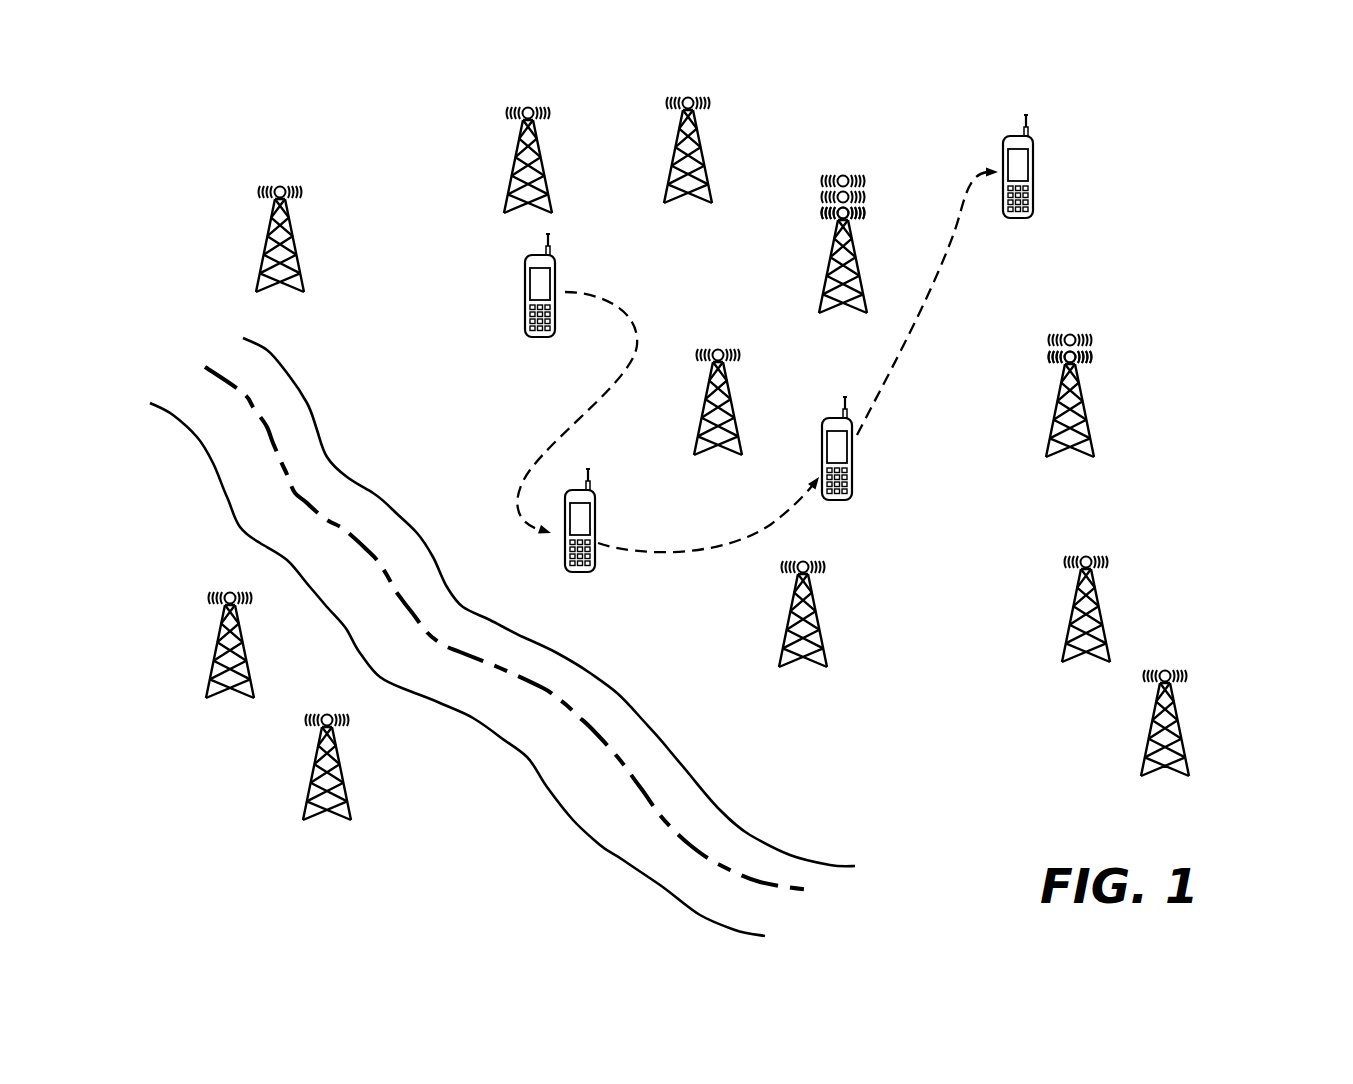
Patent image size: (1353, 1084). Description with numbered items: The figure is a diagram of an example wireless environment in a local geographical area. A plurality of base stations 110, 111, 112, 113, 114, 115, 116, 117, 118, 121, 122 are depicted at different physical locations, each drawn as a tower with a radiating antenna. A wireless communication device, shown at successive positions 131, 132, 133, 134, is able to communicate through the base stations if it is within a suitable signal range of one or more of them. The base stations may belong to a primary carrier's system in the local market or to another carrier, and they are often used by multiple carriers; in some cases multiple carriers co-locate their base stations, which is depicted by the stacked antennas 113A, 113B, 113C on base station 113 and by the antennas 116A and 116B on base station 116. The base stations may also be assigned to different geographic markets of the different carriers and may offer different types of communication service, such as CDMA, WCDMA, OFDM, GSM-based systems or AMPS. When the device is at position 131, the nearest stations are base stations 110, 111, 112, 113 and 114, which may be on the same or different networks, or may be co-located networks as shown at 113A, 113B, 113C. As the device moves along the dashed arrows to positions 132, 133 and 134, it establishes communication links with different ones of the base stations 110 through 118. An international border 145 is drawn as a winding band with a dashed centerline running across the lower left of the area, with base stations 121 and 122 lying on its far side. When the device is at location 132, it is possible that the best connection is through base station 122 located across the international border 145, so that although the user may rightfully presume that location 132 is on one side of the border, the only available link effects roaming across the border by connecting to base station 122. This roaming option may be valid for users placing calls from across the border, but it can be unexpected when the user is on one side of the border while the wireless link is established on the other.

The base station 110 is at (297, 260).
The base station 111 is at (543, 163).
The base station 112 is at (698, 130).
The base station 113 is at (858, 268).
The co-located base station 113A is at (836, 181).
The co-located base station 113B is at (836, 197).
The co-located base station 113C is at (836, 213).
The base station 114 is at (730, 391).
The base station 115 is at (790, 628).
The base station 116 is at (1084, 412).
The co-located base station 116A is at (1063, 340).
The co-located base station 116B is at (1063, 357).
The base station 117 is at (1097, 595).
The base station 118 is at (1185, 738).
The base station 121 is at (218, 652).
The base station 122 is at (312, 785).
The wireless communication device position 131 is at (525, 298).
The wireless communication device position 132 is at (595, 521).
The wireless communication device position 133 is at (852, 473).
The wireless communication device position 134 is at (1033, 150).
The international border 145 is at (610, 742).